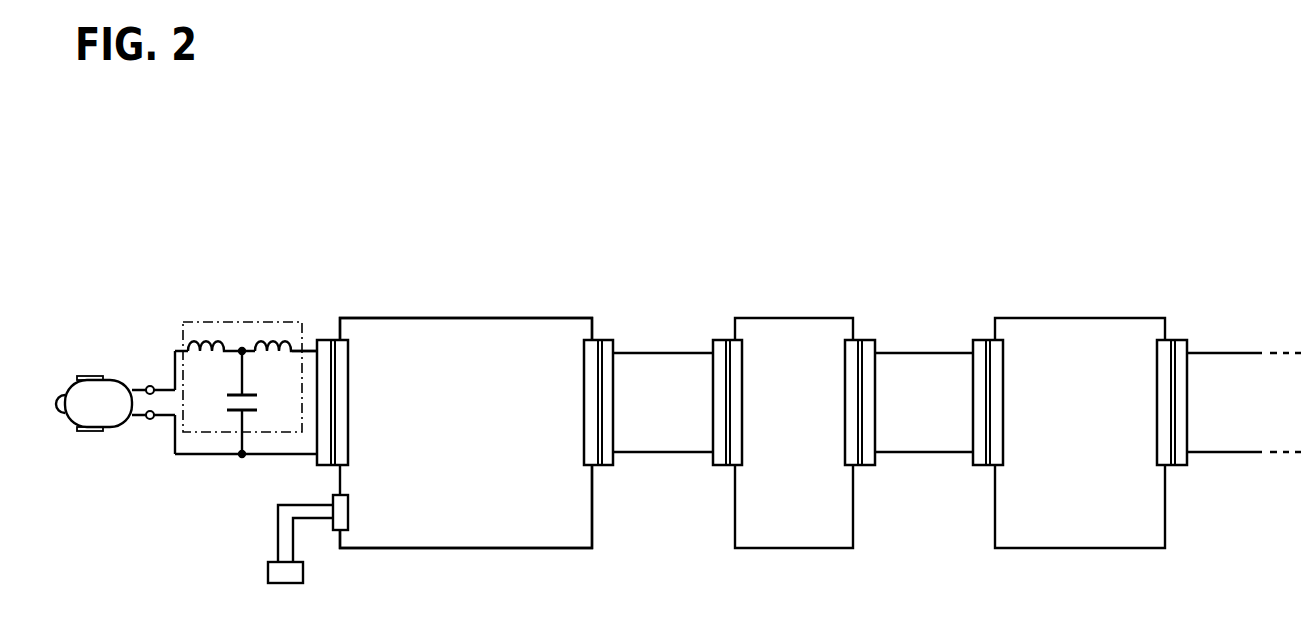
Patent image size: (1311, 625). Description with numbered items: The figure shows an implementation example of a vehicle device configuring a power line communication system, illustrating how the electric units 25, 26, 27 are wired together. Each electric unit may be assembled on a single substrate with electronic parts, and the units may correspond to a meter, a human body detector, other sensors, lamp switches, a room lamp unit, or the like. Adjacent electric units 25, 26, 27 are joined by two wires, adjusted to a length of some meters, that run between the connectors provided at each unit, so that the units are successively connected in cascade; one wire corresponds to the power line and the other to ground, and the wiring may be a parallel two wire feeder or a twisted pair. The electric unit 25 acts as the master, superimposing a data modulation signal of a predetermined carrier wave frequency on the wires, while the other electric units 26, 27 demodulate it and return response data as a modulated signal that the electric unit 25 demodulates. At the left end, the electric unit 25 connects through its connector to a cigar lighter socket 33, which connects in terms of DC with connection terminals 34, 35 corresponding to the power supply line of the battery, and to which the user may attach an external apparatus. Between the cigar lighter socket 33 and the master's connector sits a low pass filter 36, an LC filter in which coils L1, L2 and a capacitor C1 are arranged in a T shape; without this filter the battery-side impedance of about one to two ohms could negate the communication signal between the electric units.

The electric unit 25 is at (467, 318).
The electric unit 26 is at (795, 318).
The electric unit 27 is at (1077, 318).
The cigar lighter socket 33 is at (118, 382).
The connection terminal 34 is at (150, 386).
The connection terminal 35 is at (150, 419).
The low pass filter 36 is at (243, 322).
The coil L1 is at (206, 345).
The coil L2 is at (268, 356).
The capacitor C1 is at (257, 403).